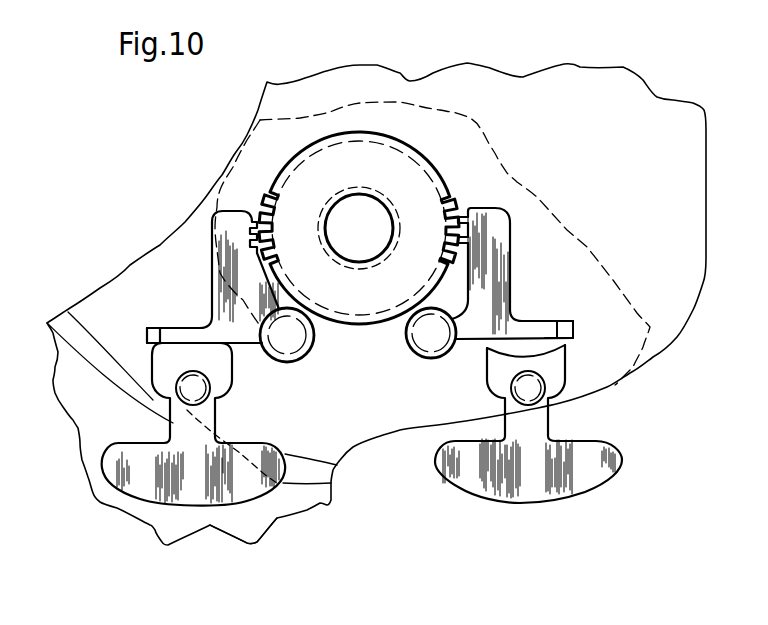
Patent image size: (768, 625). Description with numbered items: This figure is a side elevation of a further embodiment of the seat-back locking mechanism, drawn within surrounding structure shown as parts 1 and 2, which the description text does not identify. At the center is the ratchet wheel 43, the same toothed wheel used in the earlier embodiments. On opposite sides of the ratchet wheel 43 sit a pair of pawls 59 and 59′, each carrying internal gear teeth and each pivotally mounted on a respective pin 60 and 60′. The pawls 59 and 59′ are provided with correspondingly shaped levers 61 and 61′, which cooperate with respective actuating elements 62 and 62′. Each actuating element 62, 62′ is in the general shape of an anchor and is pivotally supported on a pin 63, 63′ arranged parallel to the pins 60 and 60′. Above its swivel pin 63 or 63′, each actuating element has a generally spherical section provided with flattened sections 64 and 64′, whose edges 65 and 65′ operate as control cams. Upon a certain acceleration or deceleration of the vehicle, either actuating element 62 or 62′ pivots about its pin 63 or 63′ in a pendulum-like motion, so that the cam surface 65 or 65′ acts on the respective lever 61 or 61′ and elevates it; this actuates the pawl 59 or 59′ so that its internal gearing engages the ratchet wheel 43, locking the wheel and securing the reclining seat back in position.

The housing 1 is at (278, 517).
The housing cover 2 is at (703, 135).
The ratchet wheel 43 is at (413, 180).
The pawl 59 is at (497, 257).
The pawl 59′ is at (214, 289).
The pin 60 is at (431, 358).
The pin 60′ is at (287, 362).
The lever 61 is at (566, 322).
The lever 61′ is at (151, 338).
The actuating element 62 is at (550, 453).
The actuating element 62′ is at (203, 432).
The pin 63 is at (537, 380).
The pin 63′ is at (167, 400).
The flattened section 64 is at (523, 322).
The flattened section 64′ is at (190, 338).
The edge 65 is at (562, 341).
The edge 65′ is at (157, 328).